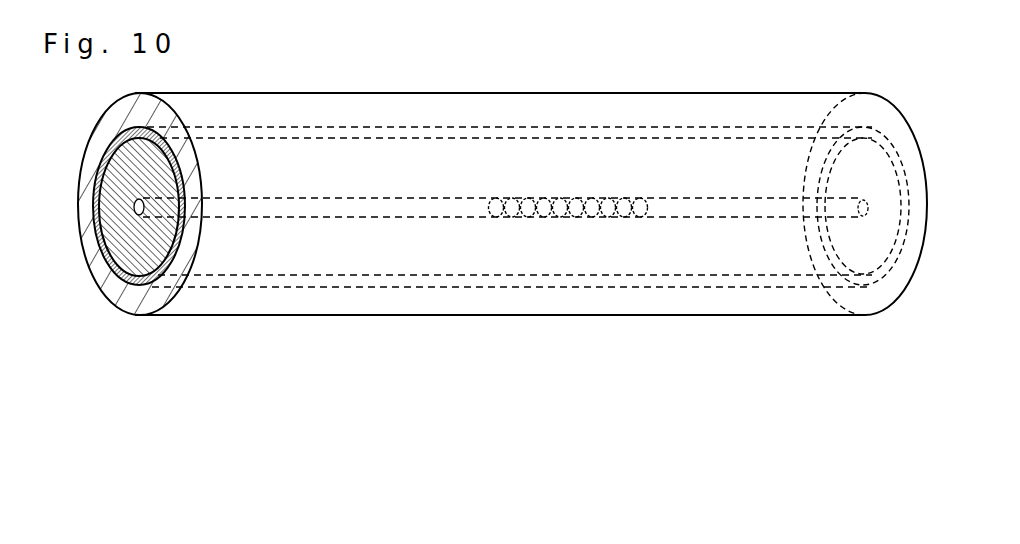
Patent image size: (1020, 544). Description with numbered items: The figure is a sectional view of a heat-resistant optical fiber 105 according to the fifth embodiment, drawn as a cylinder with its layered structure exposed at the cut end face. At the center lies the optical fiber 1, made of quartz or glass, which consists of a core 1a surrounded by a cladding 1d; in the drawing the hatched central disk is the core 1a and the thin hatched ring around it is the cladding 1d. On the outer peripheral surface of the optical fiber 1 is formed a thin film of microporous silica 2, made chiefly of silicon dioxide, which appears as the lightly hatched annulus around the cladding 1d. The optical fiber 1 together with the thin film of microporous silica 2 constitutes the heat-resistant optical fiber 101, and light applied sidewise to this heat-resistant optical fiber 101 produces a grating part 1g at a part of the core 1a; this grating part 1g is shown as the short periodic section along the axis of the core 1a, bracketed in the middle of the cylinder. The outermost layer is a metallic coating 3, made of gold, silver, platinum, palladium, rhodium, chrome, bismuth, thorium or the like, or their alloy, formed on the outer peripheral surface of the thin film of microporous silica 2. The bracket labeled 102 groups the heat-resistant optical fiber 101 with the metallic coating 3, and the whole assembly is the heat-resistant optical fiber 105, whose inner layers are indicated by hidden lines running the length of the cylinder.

The heat-resistant optical fiber 105 is at (515, 57).
The cable core with outer conductor 102 is at (370, 475).
The heat-resistant optical fiber 101 is at (227, 422).
The metallic coating 3 is at (200, 237).
The thin film of microporous silica 2 is at (184, 232).
The optical fiber 1 is at (127, 368).
The cladding 1d is at (100, 213).
The core 1a is at (500, 250).
The grating part 1g is at (652, 220).